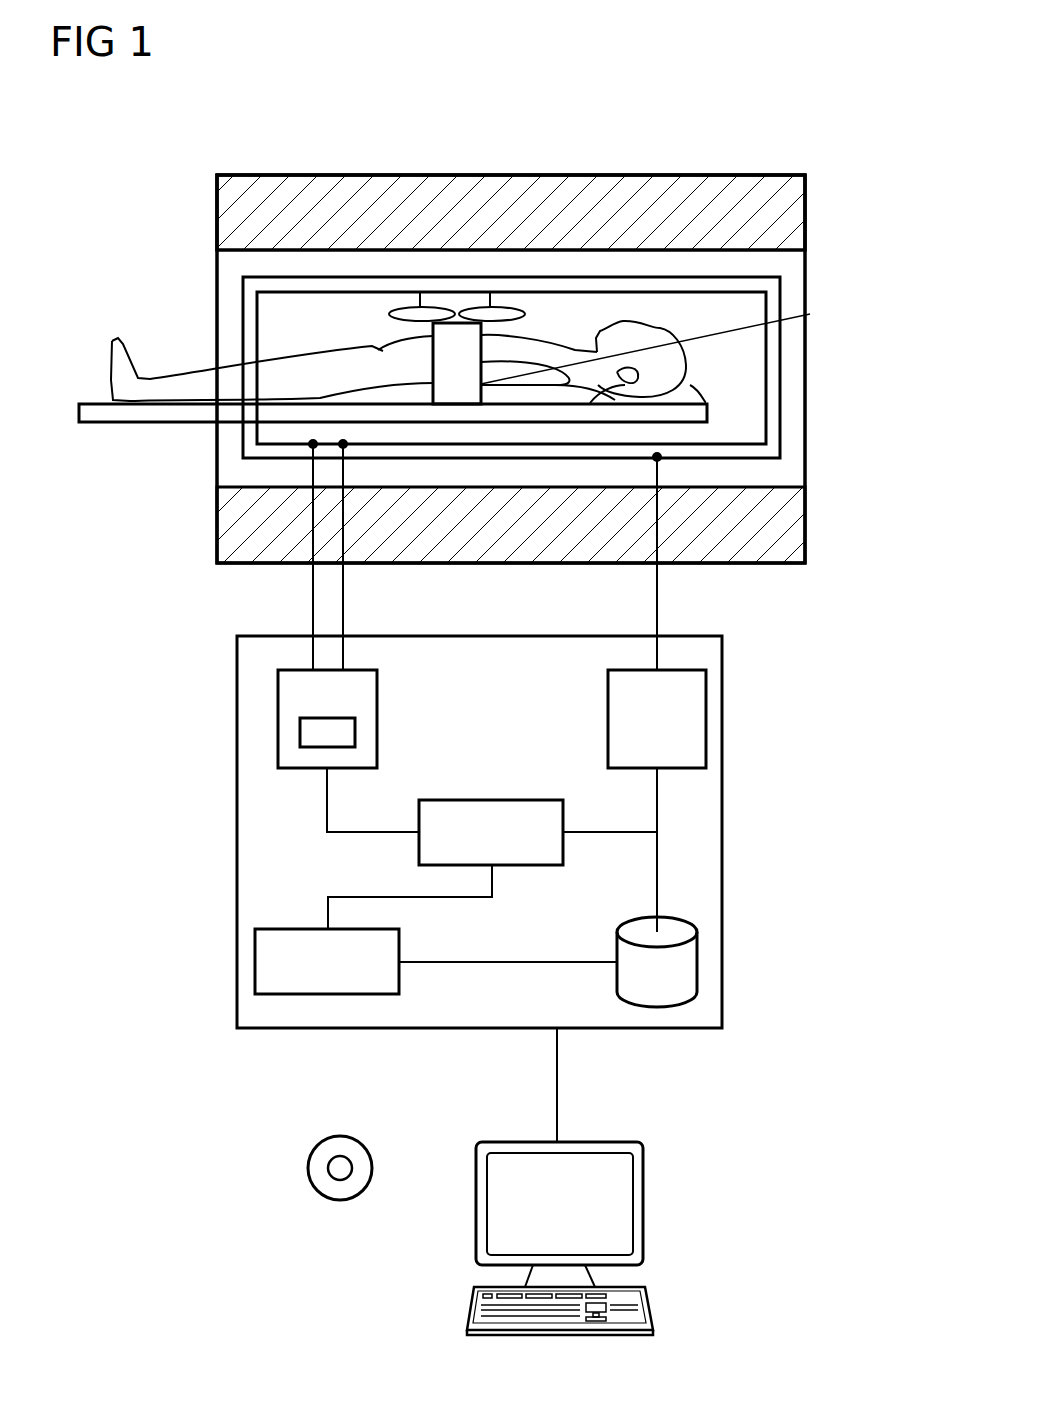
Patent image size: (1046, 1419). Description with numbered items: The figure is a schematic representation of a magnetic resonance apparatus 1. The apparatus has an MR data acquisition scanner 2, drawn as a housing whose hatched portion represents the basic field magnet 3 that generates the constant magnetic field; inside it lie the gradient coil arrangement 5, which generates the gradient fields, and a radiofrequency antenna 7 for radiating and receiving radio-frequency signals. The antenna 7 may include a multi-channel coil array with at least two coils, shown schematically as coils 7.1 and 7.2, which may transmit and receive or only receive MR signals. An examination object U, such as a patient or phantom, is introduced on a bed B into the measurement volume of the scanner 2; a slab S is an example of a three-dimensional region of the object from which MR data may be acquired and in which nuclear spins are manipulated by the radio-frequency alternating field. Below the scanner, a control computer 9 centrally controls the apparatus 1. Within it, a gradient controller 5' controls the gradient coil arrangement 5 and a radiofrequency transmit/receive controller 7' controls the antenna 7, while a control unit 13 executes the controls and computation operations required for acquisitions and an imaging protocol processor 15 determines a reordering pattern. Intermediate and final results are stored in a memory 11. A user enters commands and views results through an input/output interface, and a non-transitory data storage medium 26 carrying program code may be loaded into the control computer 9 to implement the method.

The magnetic resonance apparatus 1 is at (712, 137).
The MR data acquisition scanner 2 is at (806, 205).
The basic field magnet 3 is at (590, 180).
The gradient coil arrangement 5 is at (548, 367).
The radiofrequency antenna 7 is at (555, 368).
The coil 7.1 is at (402, 307).
The coil 7.2 is at (508, 307).
The examination object U is at (115, 340).
The bed B is at (140, 415).
The slab S is at (805, 315).
The control computer 9 is at (722, 828).
The radiofrequency transmit/receive controller 7' is at (283, 719).
The gradient controller 5' is at (698, 719).
The control unit 13 is at (502, 800).
The imaging protocol processor 15 is at (255, 962).
The memory 11 is at (698, 962).
The non-transitory data storage medium 26 is at (308, 1172).